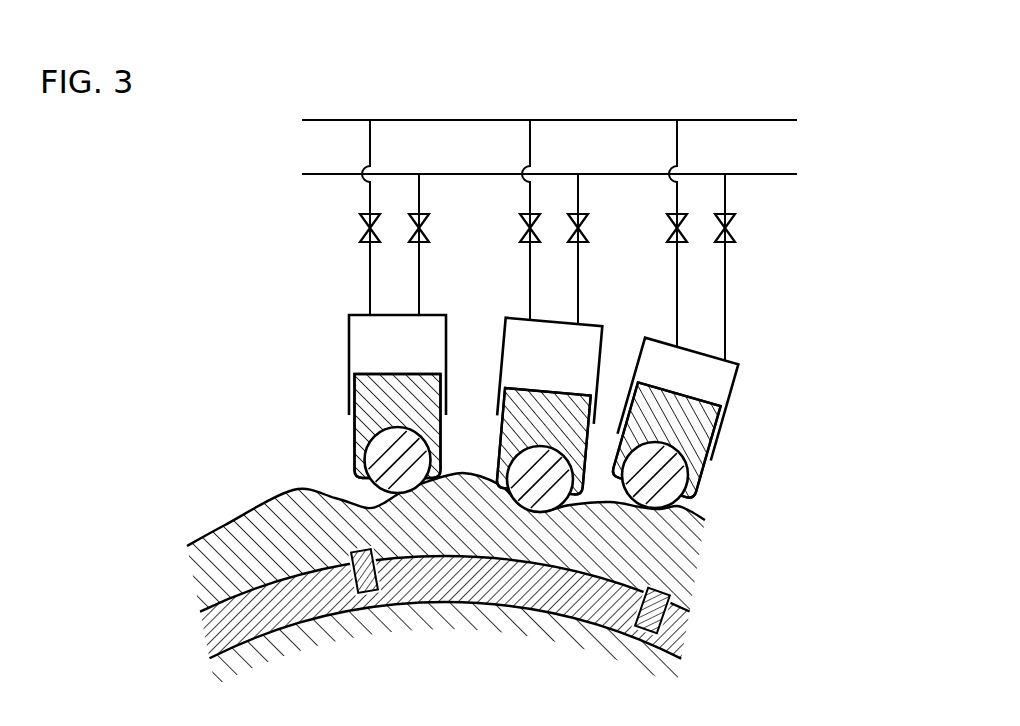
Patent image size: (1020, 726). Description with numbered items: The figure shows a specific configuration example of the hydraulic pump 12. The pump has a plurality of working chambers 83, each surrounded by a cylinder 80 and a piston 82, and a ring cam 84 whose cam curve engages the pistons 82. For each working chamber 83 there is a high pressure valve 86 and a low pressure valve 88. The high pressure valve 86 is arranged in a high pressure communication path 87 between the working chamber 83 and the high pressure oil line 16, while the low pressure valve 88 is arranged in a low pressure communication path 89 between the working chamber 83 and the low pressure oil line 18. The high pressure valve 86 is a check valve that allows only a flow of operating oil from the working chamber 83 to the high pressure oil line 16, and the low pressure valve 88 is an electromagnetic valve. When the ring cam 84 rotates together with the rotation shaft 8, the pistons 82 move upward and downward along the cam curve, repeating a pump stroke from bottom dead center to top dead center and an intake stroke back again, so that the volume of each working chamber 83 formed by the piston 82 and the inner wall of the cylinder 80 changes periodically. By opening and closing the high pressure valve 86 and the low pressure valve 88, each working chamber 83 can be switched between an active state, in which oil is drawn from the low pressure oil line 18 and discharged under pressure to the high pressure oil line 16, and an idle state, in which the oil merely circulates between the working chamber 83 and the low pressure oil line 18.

The rotation shaft 8 is at (242, 660).
The hydraulic pump 12 is at (187, 355).
The high pressure oil line 16 is at (777, 175).
The low pressure oil line 18 is at (777, 121).
The cylinder 80 is at (349, 340).
The piston 82 is at (706, 474).
The working chamber 83 is at (365, 358).
The ring cam 84 is at (690, 555).
The high pressure valve 86 is at (429, 235).
The high pressure communication path 87 is at (419, 191).
The low pressure valve 88 is at (360, 233).
The low pressure communication path 89 is at (370, 143).